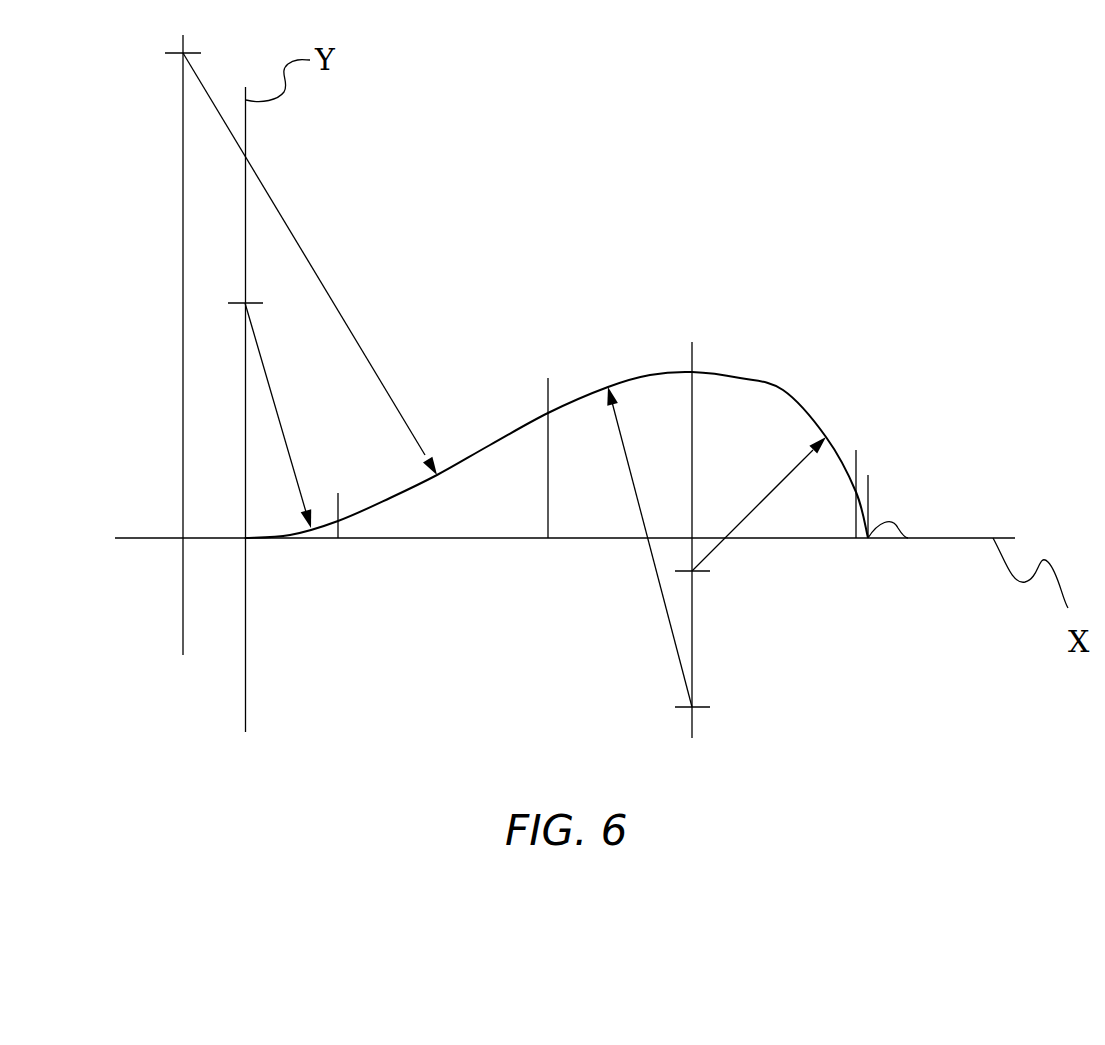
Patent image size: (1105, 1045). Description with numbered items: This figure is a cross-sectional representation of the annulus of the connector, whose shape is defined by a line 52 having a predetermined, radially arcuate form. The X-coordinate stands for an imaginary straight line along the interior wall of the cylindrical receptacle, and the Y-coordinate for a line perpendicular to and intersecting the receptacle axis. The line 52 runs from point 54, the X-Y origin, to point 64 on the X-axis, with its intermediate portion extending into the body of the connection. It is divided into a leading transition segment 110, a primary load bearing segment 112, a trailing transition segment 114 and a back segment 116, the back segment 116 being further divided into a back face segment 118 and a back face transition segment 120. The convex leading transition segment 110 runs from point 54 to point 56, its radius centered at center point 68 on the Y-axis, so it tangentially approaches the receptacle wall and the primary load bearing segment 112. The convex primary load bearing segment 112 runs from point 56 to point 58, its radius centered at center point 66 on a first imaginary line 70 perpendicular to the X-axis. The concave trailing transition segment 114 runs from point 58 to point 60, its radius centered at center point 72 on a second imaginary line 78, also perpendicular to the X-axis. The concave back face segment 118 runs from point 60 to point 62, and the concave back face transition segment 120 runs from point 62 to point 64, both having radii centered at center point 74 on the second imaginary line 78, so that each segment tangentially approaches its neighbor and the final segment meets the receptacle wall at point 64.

The line 52 is at (780, 390).
The point 54 is at (244, 536).
The point 56 is at (340, 520).
The point 58 is at (548, 413).
The point 60 is at (695, 368).
The point 62 is at (856, 492).
The point 64 is at (868, 538).
The center point 66 is at (180, 55).
The center point 68 is at (245, 305).
The first imaginary line 70 is at (183, 585).
The center point 72 is at (688, 718).
The center point 74 is at (697, 573).
The second imaginary line 78 is at (693, 723).
The leading transition segment 110 is at (330, 523).
The primary load bearing segment 112 is at (504, 437).
The trailing transition segment 114 is at (637, 377).
The back segment 116 is at (945, 392).
The back face segment 118 is at (813, 417).
The back face transition segment 120 is at (863, 513).